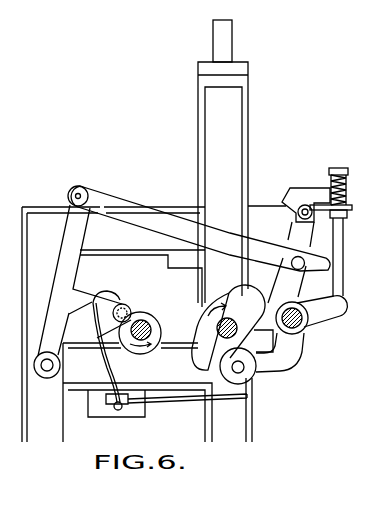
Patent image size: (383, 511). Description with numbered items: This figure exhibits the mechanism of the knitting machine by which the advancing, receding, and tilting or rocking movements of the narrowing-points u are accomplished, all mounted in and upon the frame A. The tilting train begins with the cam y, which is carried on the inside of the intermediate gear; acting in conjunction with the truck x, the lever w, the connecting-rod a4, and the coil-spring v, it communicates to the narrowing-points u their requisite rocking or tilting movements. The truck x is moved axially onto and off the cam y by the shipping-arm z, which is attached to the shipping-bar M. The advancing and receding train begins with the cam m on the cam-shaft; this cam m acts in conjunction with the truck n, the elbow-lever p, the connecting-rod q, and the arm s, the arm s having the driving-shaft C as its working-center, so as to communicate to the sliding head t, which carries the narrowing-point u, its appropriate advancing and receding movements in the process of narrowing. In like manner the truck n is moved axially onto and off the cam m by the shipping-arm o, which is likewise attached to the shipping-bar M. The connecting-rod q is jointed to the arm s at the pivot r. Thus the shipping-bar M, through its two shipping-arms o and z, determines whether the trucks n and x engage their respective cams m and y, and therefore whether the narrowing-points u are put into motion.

The frame A is at (223, 161).
The narrowing-point u is at (267, 199).
The sliding head t is at (306, 197).
The coil-spring v is at (343, 186).
The connecting-rod a4 is at (335, 250).
The arm s is at (291, 262).
The connecting-rod q is at (199, 228).
The pivot pin r is at (298, 263).
The elbow-lever p is at (78, 291).
The truck n is at (114, 314).
The cam m is at (147, 333).
The shipping-arm o is at (105, 346).
The shipping-bar M is at (117, 401).
The shipping-arm z is at (187, 405).
The cam y is at (228, 327).
The truck x is at (238, 365).
The lever w is at (280, 352).
The driving-shaft C is at (311, 316).